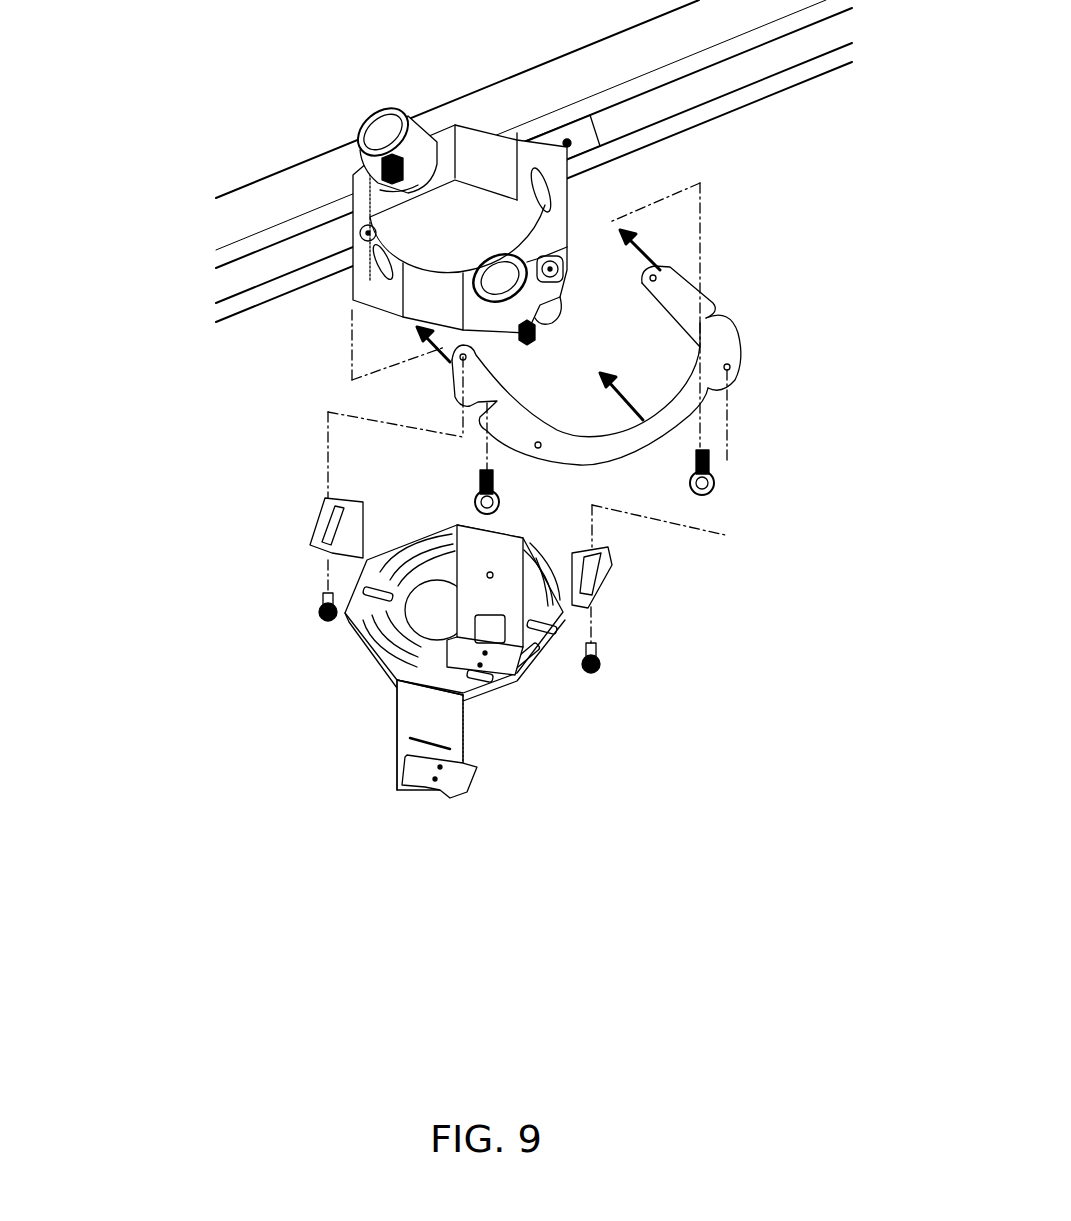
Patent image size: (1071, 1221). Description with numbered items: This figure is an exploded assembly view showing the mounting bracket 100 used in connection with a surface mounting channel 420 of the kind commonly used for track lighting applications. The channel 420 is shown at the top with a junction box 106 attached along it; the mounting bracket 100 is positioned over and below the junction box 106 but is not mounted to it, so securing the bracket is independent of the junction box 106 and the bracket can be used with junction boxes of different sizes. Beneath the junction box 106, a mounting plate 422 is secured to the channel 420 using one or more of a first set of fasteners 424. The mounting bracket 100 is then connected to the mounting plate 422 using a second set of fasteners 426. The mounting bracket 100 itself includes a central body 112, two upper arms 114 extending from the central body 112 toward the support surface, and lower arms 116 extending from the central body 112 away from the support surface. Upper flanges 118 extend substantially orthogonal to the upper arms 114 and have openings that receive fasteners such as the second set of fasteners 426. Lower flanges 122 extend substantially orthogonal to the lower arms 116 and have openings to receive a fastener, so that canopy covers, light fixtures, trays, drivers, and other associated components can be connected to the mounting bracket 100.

The mounting bracket 100 is at (228, 615).
The junction box 106 is at (349, 190).
The central body 112 is at (347, 620).
The upper arms 114 is at (333, 567).
The lower arms 116 is at (460, 712).
The upper flanges 118 is at (605, 562).
The lower flanges 122 is at (418, 770).
The surface mounting channel 420 is at (781, 103).
The mounting plate 422 is at (745, 348).
The first set of fasteners 424 is at (716, 482).
The second set of fasteners 426 is at (603, 655).